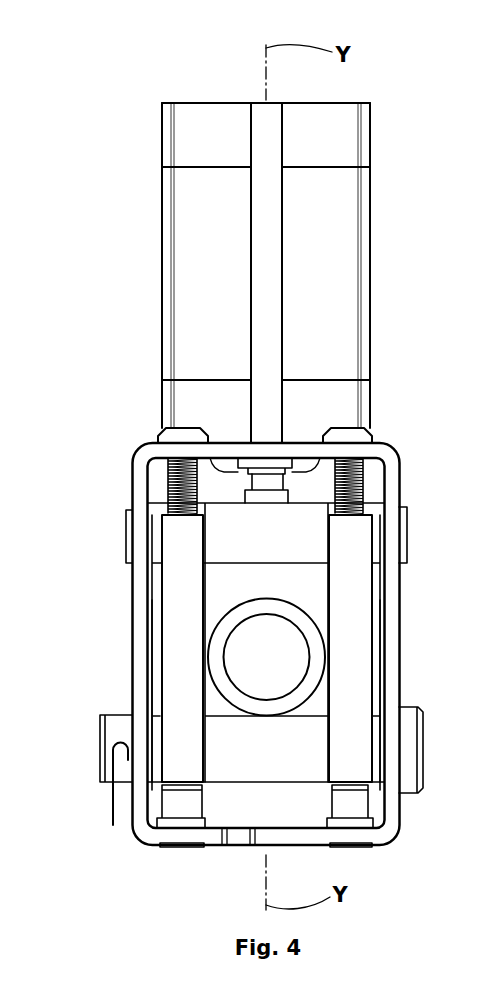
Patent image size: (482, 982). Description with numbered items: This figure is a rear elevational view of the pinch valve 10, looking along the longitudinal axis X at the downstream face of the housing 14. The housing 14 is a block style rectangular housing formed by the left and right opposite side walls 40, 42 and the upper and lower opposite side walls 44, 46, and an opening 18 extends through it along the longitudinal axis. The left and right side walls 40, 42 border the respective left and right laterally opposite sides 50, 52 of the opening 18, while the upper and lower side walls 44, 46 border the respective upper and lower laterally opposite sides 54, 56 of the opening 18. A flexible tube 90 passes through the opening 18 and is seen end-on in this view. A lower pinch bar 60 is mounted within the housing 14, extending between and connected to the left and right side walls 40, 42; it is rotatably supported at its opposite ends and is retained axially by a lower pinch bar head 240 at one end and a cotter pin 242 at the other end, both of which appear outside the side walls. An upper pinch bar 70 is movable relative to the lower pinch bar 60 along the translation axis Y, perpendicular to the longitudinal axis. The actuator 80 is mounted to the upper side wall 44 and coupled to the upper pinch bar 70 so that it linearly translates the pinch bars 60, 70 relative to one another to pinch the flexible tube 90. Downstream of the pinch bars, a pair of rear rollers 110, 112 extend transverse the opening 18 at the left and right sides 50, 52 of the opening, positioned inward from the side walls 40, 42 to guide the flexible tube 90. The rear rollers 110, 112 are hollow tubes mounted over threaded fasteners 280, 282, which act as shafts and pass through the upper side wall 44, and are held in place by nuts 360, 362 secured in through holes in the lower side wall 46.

The pinch valve 10 is at (140, 88).
The actuator 80 is at (210, 201).
The upper lateral side of the opening 54 is at (243, 450).
The housing 14 is at (122, 463).
The upper side wall 44 is at (237, 470).
The upper pinch bar 70 is at (305, 503).
The threaded fastener 282 is at (175, 485).
The threaded fastener 280 is at (365, 480).
The opening 18 is at (310, 588).
The right lateral side of the opening 52 is at (140, 694).
The left lateral side of the opening 50 is at (392, 689).
The right rear roller 112 is at (172, 590).
The left rear roller 110 is at (355, 540).
The flexible tube 90 is at (210, 652).
The right side wall 42 is at (134, 628).
The left side wall 40 is at (392, 632).
The cotter pin 242 is at (123, 797).
The lower pinch bar head 240 is at (407, 782).
The nut 362 is at (173, 802).
The nut 360 is at (355, 803).
The lower lateral side of the opening 56 is at (222, 815).
The lower side wall 46 is at (270, 830).
The lower pinch bar 60 is at (287, 783).